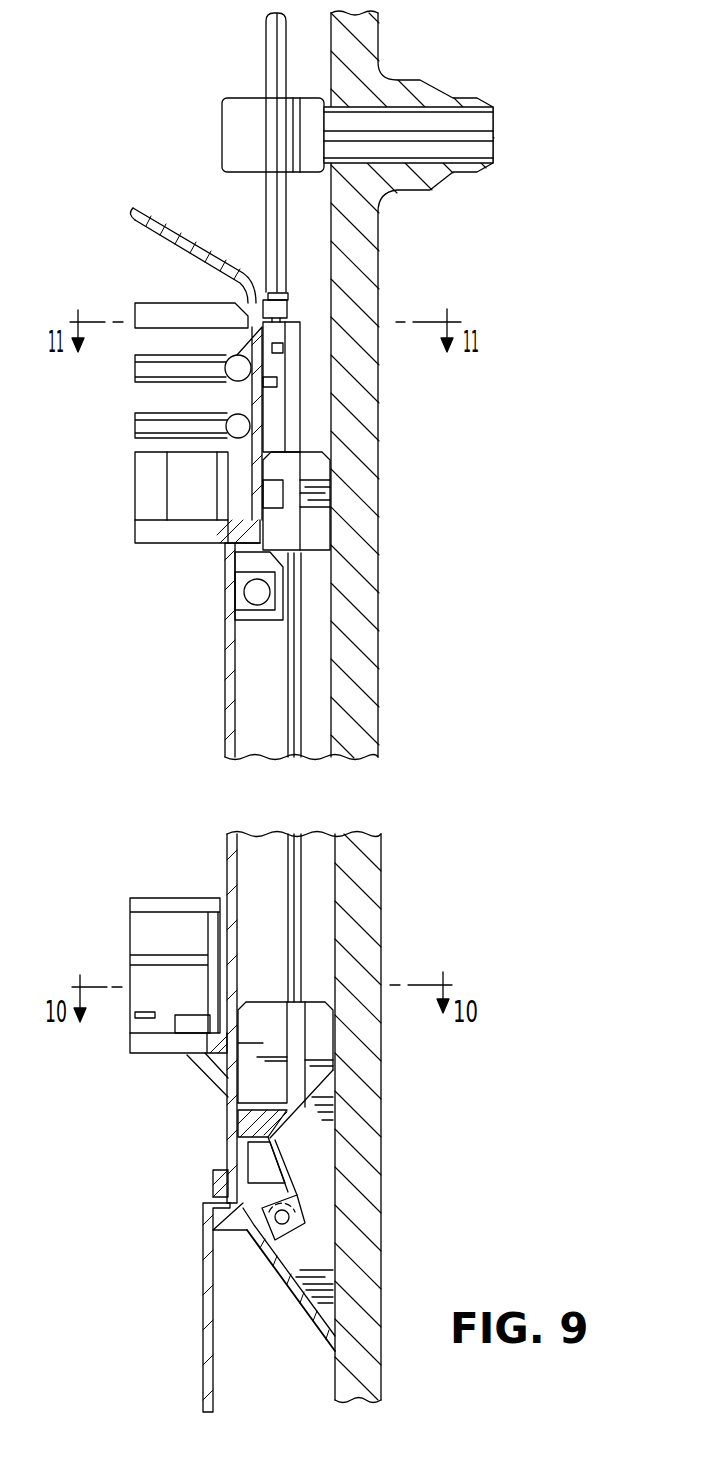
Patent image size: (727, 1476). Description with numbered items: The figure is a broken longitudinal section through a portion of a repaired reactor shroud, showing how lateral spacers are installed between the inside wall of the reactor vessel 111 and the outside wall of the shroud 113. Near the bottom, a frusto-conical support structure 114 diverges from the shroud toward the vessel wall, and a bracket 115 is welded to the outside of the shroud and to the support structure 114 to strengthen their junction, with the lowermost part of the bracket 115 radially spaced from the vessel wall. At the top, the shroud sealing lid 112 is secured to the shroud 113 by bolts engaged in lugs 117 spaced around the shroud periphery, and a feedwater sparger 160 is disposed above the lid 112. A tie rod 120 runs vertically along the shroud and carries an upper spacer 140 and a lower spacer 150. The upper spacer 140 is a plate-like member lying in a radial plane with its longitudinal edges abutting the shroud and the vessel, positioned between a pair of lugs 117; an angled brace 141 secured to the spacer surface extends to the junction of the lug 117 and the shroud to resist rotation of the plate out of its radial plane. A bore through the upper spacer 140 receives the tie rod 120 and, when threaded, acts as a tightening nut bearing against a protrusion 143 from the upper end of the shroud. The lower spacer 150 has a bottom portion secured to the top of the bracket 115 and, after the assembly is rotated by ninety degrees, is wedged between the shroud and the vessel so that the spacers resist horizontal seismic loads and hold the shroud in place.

The reactor vessel 111 is at (367, 650).
The shroud sealing lid 112 is at (140, 208).
The shroud 113 is at (230, 705).
The support structure 114 is at (298, 1297).
The bracket 115 is at (248, 1163).
The lug 117 is at (283, 307).
The tie rod 120 is at (292, 657).
The upper spacer 140 is at (320, 494).
The angled brace 141 is at (275, 475).
The protrusion 143 is at (278, 583).
The lower spacer 150 is at (320, 1060).
The feedwater sparger 160 is at (310, 108).